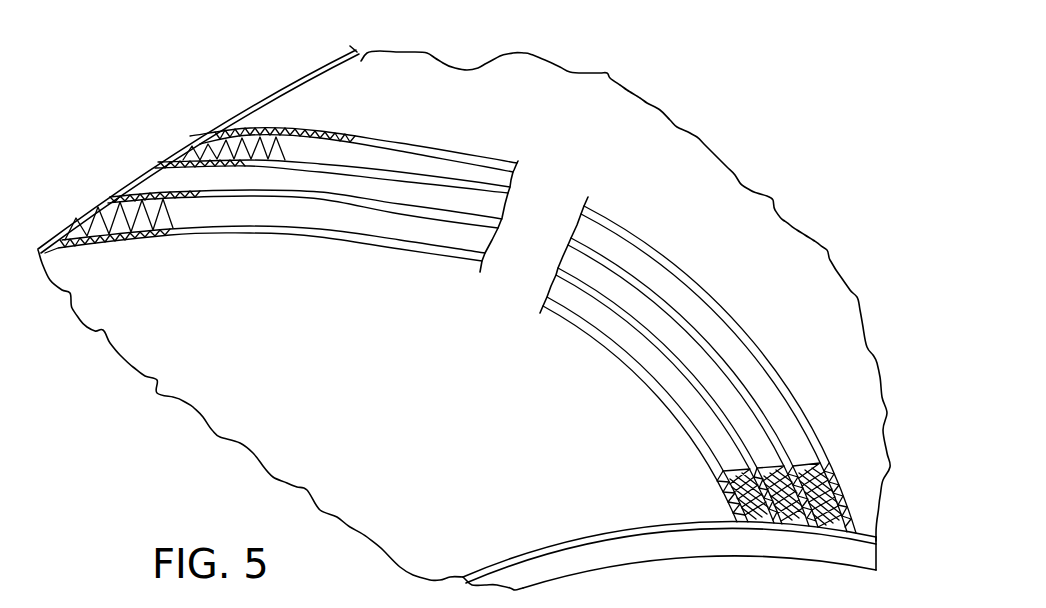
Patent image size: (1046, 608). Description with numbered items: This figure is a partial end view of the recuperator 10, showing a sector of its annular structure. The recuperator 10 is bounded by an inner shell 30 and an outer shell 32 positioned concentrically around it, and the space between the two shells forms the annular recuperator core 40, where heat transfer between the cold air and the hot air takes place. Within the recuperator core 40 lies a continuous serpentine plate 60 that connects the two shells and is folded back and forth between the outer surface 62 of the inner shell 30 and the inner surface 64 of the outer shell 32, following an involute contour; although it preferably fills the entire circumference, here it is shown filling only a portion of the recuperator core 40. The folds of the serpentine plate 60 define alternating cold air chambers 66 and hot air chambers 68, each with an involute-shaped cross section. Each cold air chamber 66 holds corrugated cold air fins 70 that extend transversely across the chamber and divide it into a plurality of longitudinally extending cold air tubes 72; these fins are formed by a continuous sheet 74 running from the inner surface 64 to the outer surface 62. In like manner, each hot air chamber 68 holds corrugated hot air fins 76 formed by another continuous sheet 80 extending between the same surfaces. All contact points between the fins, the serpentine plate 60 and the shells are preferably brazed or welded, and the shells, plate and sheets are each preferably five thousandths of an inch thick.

The recuperator 10 is at (129, 75).
The inner shell 30 is at (857, 527).
The outer shell 32 is at (304, 78).
The recuperator core 40 is at (391, 391).
The serpentine plate 60 is at (513, 160).
The outer surface of the inner shell 62 is at (583, 531).
The inner surface of the outer shell 64 is at (325, 74).
The cold air chambers 66 is at (485, 176).
The hot air chambers 68 is at (420, 201).
The cold air fins 70 is at (340, 132).
The cold air tubes 72 is at (306, 152).
The continuous sheet 74 is at (222, 129).
The hot air fins 76 is at (195, 145).
The continuous sheet 80 is at (192, 143).